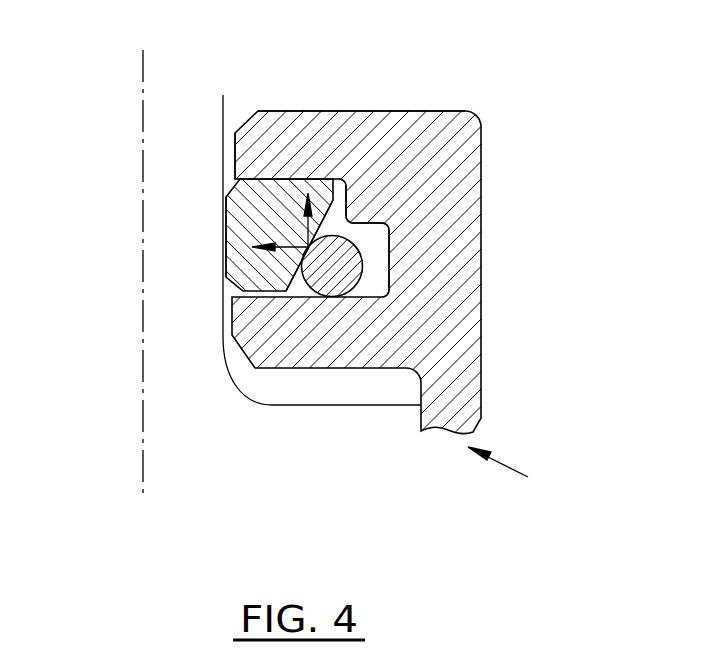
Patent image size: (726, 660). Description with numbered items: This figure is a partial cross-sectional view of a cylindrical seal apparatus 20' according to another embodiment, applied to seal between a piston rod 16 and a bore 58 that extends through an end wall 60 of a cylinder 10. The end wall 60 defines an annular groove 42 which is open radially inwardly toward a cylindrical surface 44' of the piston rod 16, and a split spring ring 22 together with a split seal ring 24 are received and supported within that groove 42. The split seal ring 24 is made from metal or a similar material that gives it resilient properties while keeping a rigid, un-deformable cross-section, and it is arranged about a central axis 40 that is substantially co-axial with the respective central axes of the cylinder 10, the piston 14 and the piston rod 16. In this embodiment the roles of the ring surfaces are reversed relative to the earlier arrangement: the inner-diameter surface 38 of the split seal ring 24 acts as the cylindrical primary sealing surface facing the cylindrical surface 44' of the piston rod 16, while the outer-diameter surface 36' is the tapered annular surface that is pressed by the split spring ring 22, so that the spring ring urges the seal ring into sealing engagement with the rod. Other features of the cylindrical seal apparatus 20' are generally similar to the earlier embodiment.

The cylinder 10 is at (473, 220).
The piston 14 is at (317, 403).
The piston rod 16 is at (226, 113).
The cylindrical seal apparatus 20' is at (520, 474).
The split spring ring 22 is at (338, 276).
The split seal ring 24 is at (226, 198).
The outer-diameter surface 36' is at (303, 337).
The inner-diameter surface 38 is at (226, 253).
The central axis 40 is at (143, 462).
The groove 42 is at (383, 270).
The cylindrical surface 44' is at (161, 143).
The bore 58 is at (228, 337).
The end wall 60 is at (315, 118).